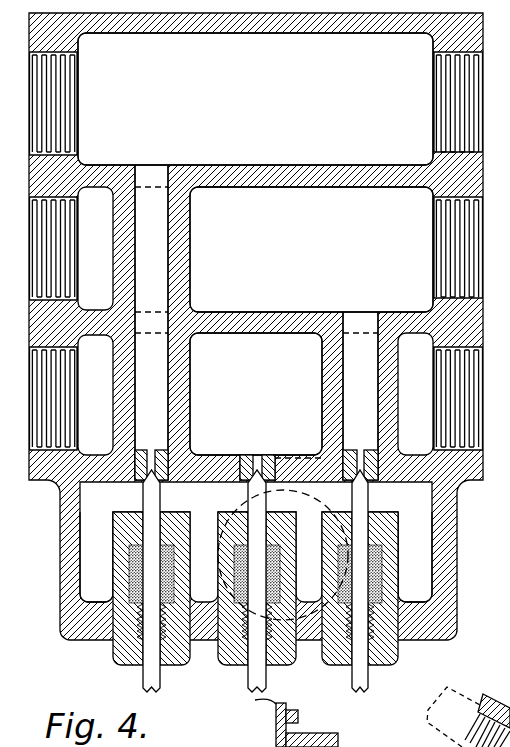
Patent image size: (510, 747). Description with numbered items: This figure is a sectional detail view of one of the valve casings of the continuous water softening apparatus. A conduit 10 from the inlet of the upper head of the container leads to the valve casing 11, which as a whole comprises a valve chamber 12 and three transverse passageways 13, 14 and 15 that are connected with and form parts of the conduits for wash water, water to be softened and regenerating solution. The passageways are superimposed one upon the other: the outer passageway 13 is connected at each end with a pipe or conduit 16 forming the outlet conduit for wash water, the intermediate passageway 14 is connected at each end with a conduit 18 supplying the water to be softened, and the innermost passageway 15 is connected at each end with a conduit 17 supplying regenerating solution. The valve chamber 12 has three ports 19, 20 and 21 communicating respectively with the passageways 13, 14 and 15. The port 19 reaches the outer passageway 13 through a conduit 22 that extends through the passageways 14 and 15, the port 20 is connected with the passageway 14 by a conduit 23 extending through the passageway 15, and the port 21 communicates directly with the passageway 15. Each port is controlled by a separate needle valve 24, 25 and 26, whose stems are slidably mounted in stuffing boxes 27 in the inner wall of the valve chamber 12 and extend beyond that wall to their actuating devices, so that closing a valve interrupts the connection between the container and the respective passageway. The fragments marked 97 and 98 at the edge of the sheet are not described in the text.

The conduit 10 is at (290, 600).
The valve casing 11 is at (509, 322).
The valve chamber 12 is at (415, 563).
The outer passageway 13 is at (255, 99).
The intermediate passageway 14 is at (311, 249).
The innermost passageway 15 is at (256, 394).
The outlet conduit for wash water 16 is at (452, 81).
The supply conduit for regenerating solution 17 is at (452, 377).
The supply conduit for water to be softened 18 is at (452, 244).
The port 19 is at (152, 456).
The port 20 is at (360, 455).
The port 21 is at (258, 455).
The conduit 22 is at (151, 322).
The conduit 23 is at (360, 396).
The needle valve 24 is at (160, 498).
The needle valve 25 is at (266, 497).
The needle valve 26 is at (368, 495).
The stuffing box 27 is at (129, 664).
The coil fragment 97 is at (462, 694).
The fitting fragment 98 is at (288, 725).